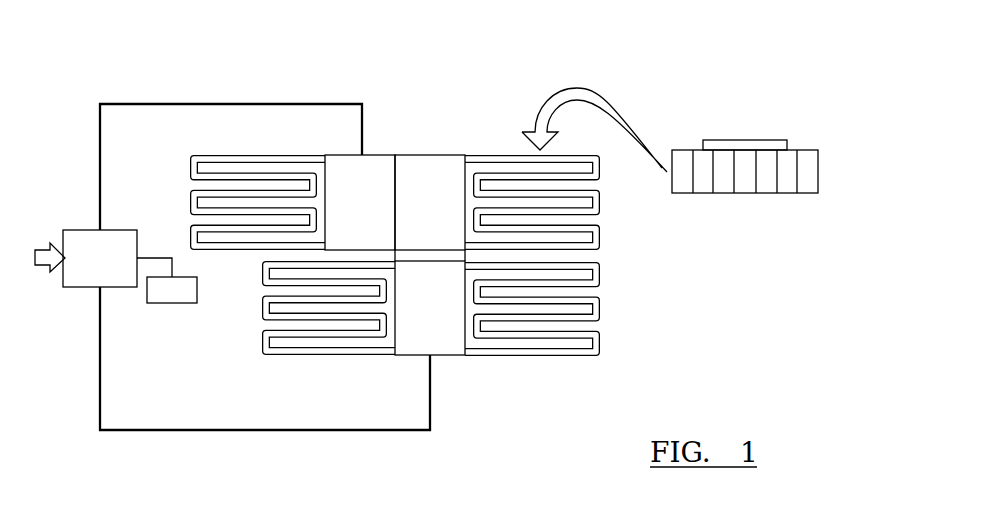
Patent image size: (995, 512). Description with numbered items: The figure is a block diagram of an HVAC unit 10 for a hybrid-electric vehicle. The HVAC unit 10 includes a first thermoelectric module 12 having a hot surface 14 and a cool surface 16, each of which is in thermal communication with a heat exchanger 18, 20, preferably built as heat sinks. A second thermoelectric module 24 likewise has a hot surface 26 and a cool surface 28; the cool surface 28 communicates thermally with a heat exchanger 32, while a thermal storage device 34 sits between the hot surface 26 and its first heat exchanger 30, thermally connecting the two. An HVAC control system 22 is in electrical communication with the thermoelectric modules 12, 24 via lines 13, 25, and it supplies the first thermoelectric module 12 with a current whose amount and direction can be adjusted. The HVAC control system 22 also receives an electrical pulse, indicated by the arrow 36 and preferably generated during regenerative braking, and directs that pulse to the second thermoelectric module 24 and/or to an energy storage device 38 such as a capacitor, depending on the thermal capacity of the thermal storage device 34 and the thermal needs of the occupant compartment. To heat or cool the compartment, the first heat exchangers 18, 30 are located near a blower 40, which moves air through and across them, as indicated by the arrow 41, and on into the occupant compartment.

The HVAC unit 10 is at (737, 75).
The first thermoelectric module 12 is at (436, 318).
The line 13 is at (98, 383).
The hot surface 14 is at (467, 354).
The cool surface 16 is at (392, 354).
The heat exchanger 18 is at (600, 300).
The heat exchanger 20 is at (262, 300).
The HVAC control system 22 is at (83, 230).
The second thermoelectric module 24 is at (370, 175).
The line 25 is at (98, 158).
The hot surface 26 is at (397, 173).
The cool surface 28 is at (318, 155).
The first heat exchanger 30 is at (600, 212).
The heat exchanger 32 is at (202, 158).
The thermal storage device 34 is at (453, 188).
The electrical pulse 36 is at (38, 262).
The energy storage device 38 is at (172, 303).
The blower 40 is at (818, 172).
The arrow 41 is at (577, 88).